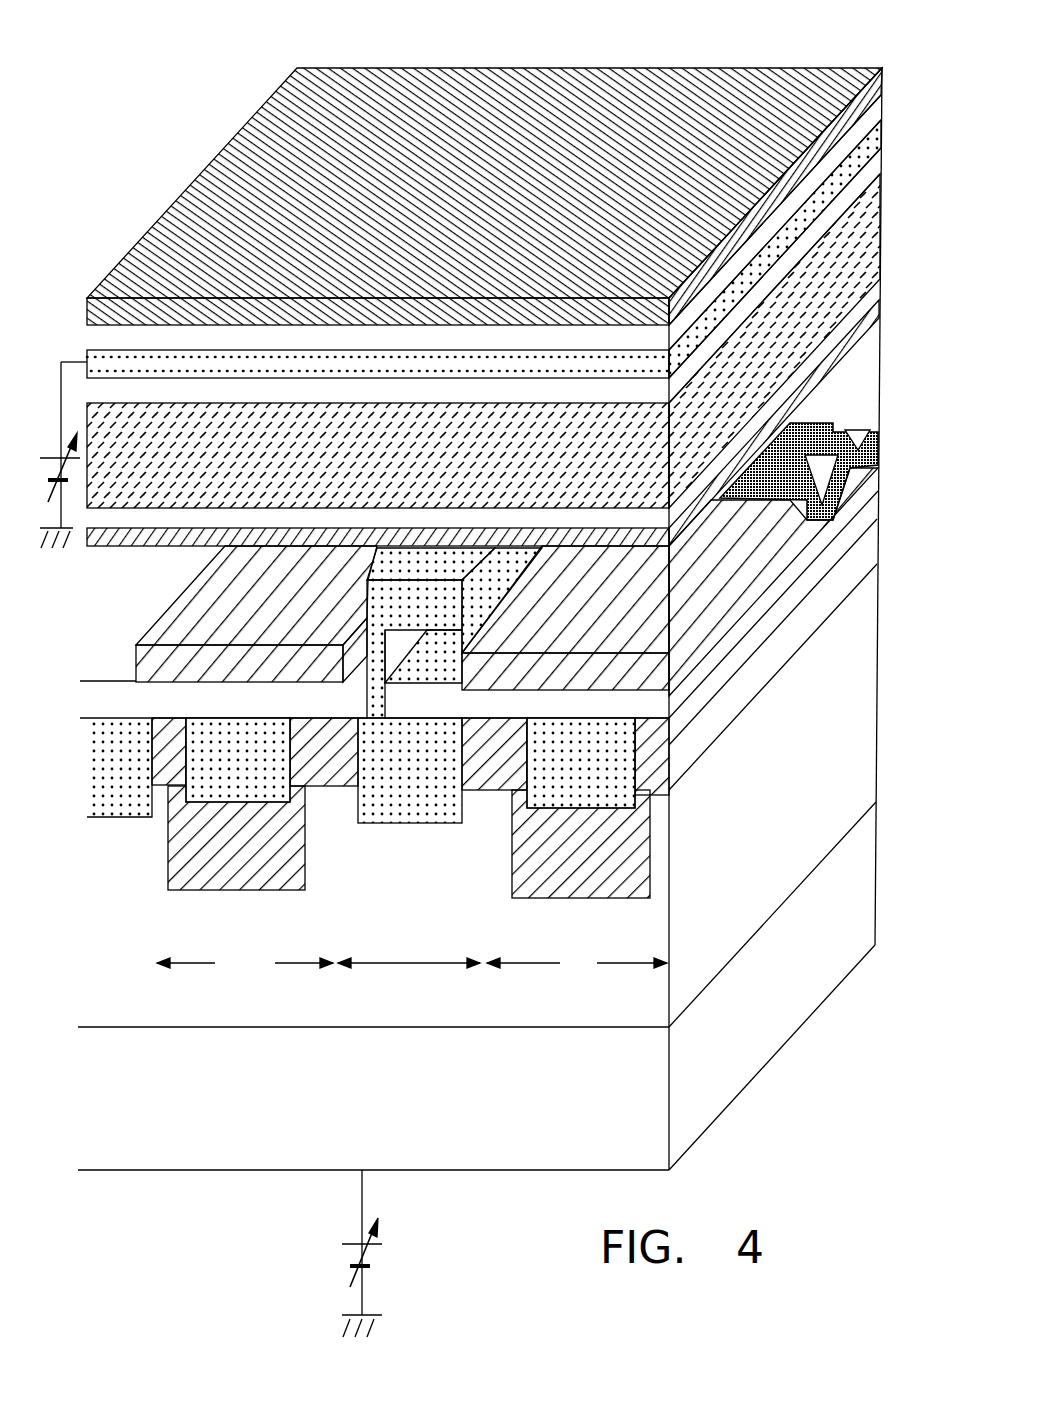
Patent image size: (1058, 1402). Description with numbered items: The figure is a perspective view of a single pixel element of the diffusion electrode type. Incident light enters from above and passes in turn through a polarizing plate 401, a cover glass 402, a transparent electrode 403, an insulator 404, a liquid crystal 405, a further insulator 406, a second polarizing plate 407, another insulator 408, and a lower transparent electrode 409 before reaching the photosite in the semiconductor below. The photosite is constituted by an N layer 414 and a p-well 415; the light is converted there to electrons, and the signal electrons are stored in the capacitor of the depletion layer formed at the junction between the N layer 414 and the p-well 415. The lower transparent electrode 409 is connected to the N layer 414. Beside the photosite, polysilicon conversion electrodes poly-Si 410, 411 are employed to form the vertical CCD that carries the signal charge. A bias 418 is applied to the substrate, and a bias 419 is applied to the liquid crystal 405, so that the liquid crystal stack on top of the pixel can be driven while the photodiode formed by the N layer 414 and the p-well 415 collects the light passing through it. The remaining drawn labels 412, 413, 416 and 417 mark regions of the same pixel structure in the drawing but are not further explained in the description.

The polarizing plate 401 is at (833, 125).
The cover glass 402 is at (863, 127).
The transparent electrode 403 is at (506, 196).
The insulator 404 is at (893, 117).
The liquid crystal 405 is at (907, 140).
The insulator 406 is at (910, 193).
The polarizing plate 407 is at (890, 243).
The insulator 408 is at (868, 368).
The transparent electrode 409 is at (432, 615).
The poly-Si 410 is at (747, 543).
The poly-Si 411 is at (857, 458).
The gate insulating layer 412 is at (747, 610).
The photosite 413 is at (389, 981).
The N layer 414 is at (415, 807).
The p-well 415 is at (477, 619).
The p-type channel stop region 416 is at (328, 788).
The vertical CCD channel 417 is at (627, 807).
The bias 418 is at (372, 1262).
The bias 419 is at (73, 472).